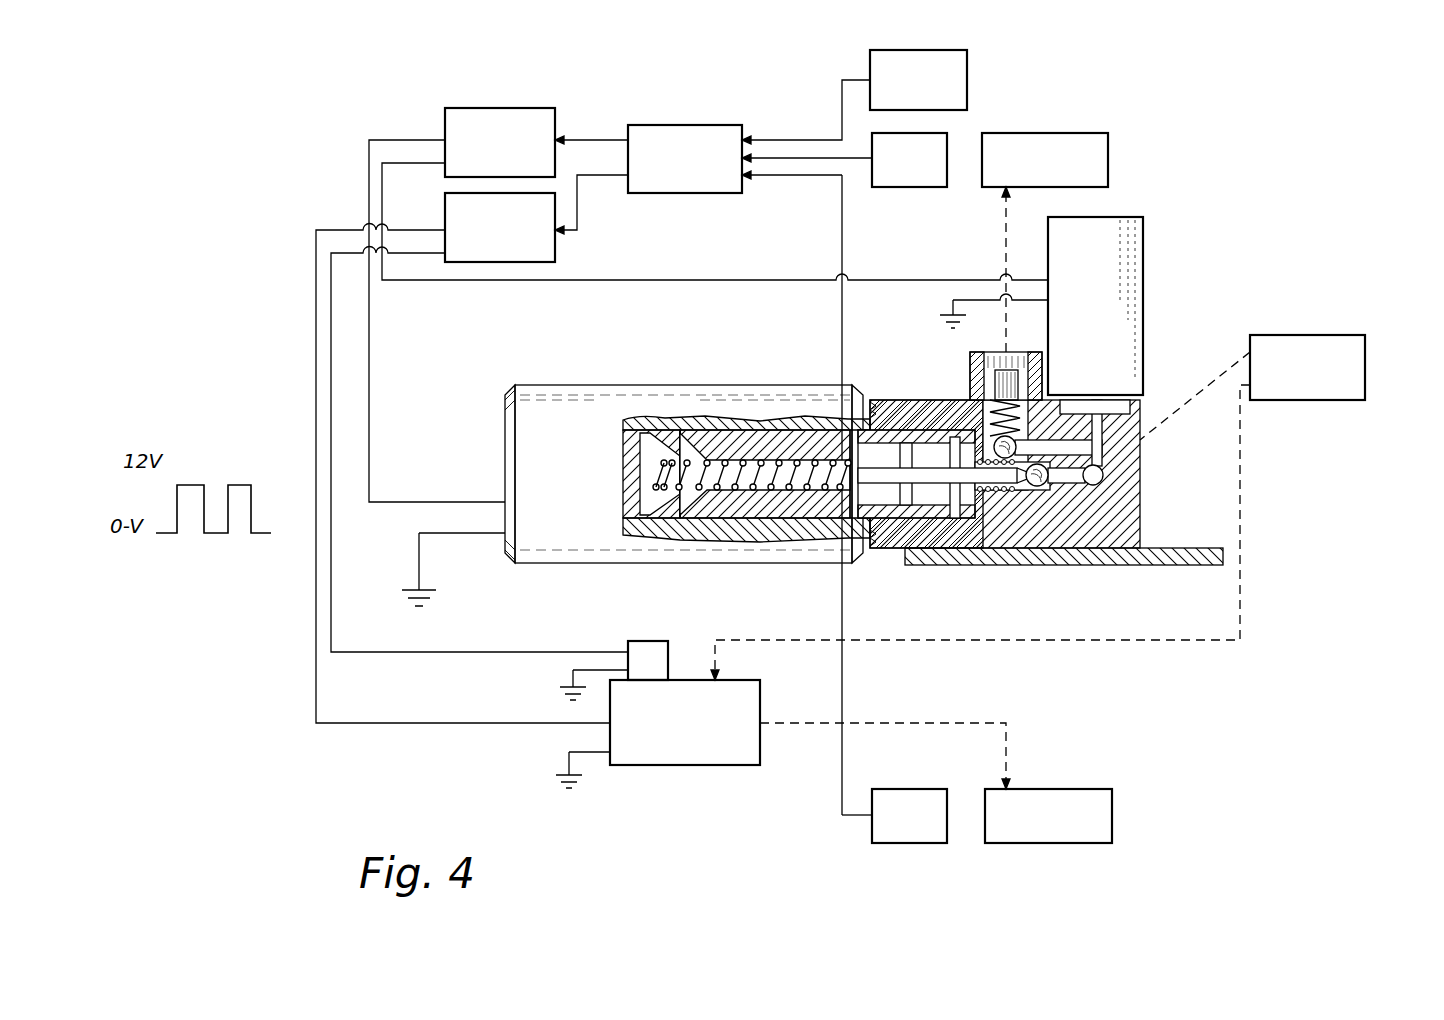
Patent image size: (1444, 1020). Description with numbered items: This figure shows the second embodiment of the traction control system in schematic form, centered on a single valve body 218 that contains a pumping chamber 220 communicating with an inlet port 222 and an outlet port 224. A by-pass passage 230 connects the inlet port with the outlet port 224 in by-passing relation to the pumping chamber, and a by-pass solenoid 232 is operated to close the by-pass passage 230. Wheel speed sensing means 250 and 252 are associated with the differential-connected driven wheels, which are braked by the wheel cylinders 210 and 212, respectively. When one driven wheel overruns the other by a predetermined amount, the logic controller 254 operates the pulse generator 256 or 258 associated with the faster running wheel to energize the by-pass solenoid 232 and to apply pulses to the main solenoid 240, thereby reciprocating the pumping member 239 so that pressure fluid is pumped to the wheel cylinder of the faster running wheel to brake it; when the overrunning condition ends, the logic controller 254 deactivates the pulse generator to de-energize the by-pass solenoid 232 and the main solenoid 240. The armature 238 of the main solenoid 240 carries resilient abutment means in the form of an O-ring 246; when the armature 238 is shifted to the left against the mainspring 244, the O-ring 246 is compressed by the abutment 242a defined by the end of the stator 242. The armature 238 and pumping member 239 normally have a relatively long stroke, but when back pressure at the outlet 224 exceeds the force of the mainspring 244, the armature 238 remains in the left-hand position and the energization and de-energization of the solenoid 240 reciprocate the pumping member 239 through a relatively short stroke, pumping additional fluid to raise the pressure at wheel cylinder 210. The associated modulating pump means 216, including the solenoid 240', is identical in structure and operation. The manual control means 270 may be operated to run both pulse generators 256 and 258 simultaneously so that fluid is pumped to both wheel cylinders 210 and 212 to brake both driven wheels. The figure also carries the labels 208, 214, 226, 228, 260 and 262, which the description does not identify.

The master cylinder 208 is at (1365, 360).
The wheel cylinder 210 is at (1108, 160).
The wheel cylinder 212 is at (1035, 843).
The modulator valve assembly 214 is at (597, 330).
The modulating pump means 216 is at (760, 700).
The valve body 218 is at (1125, 510).
The pumping chamber 220 is at (1020, 490).
The inlet port 222 is at (1104, 476).
The outlet port 224 is at (1025, 370).
The passage 226 is at (1050, 412).
The ball 228 is at (1047, 482).
The by-pass passage 230 is at (1070, 452).
The by-pass solenoid 232 is at (1143, 240).
The armature 238 is at (713, 430).
The pumping member 239 is at (903, 486).
The main solenoid 240 is at (684, 452).
The solenoid 240' is at (614, 649).
The stator 242 is at (702, 540).
The abutment 242a is at (925, 464).
The mainspring 244 is at (770, 460).
The O-ring 246 is at (928, 424).
The wheel speed sensing means 250 is at (905, 187).
The wheel speed sensing means 252 is at (900, 843).
The logic controller 254 is at (680, 125).
The pulse generator 256 is at (492, 108).
The pulse generator 258 is at (445, 219).
The electrical line 260 is at (369, 406).
The electrical line 262 is at (740, 280).
The manual control means 270 is at (967, 80).